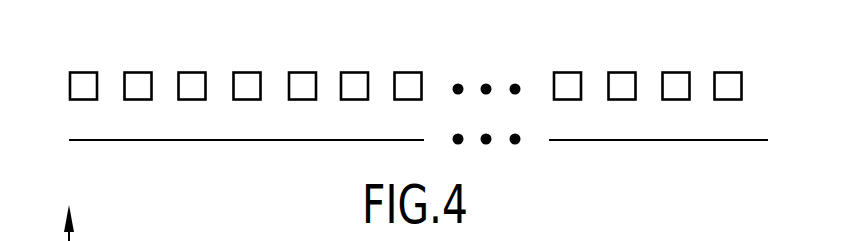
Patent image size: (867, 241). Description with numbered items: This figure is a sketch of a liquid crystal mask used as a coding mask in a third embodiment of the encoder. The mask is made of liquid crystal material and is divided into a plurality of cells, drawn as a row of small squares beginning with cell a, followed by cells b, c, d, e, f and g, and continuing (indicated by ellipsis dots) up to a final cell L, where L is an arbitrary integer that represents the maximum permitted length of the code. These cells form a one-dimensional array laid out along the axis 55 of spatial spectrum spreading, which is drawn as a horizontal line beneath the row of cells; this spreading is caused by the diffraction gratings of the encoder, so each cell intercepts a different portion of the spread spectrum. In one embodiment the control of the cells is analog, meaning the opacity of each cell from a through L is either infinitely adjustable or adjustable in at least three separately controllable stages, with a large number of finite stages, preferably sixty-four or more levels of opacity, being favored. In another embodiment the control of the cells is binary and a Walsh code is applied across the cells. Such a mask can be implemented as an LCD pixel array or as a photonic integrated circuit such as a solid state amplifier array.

The axis of spatial spectrum spreading 55 is at (637, 141).
The cell a is at (82, 72).
The cell b is at (136, 72).
The cell c is at (190, 72).
The cell d is at (245, 72).
The cell e is at (300, 72).
The cell f is at (353, 72).
The cell g is at (406, 72).
The cell L is at (727, 72).